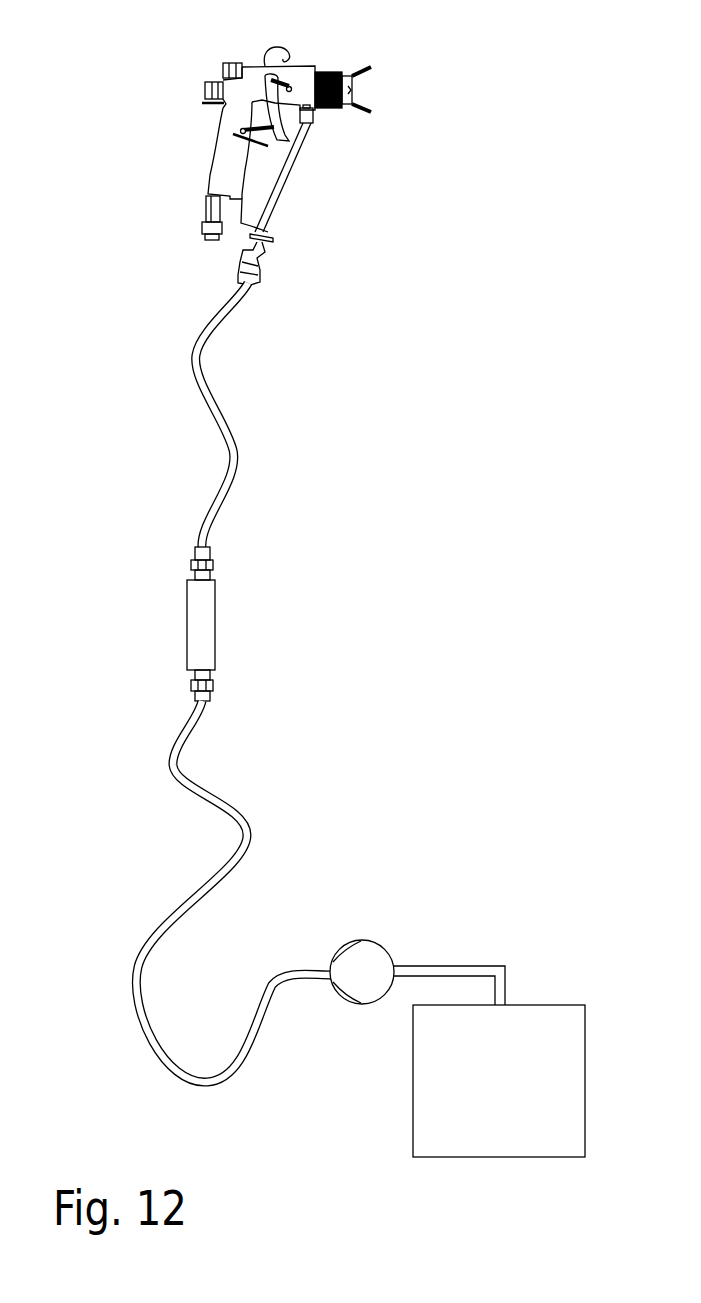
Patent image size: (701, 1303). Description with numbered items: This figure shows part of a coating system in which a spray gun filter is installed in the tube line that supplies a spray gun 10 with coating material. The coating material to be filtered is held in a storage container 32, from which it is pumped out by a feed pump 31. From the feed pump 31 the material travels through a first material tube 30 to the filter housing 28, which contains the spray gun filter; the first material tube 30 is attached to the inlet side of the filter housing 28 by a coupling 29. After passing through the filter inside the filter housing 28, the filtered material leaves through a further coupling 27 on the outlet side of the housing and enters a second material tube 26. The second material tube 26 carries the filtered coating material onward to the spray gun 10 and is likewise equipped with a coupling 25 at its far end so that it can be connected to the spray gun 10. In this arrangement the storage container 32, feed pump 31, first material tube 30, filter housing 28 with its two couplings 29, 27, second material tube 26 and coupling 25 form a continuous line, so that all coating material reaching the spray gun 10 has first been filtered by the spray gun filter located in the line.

The spray gun 10 is at (269, 134).
The coupling 25 is at (269, 272).
The second material tube 26 is at (243, 415).
The further coupling 27 is at (228, 554).
The filter housing 28 is at (228, 618).
The coupling 29 is at (228, 679).
The first material tube 30 is at (233, 891).
The feed pump 31 is at (417, 952).
The storage container 32 is at (499, 1060).